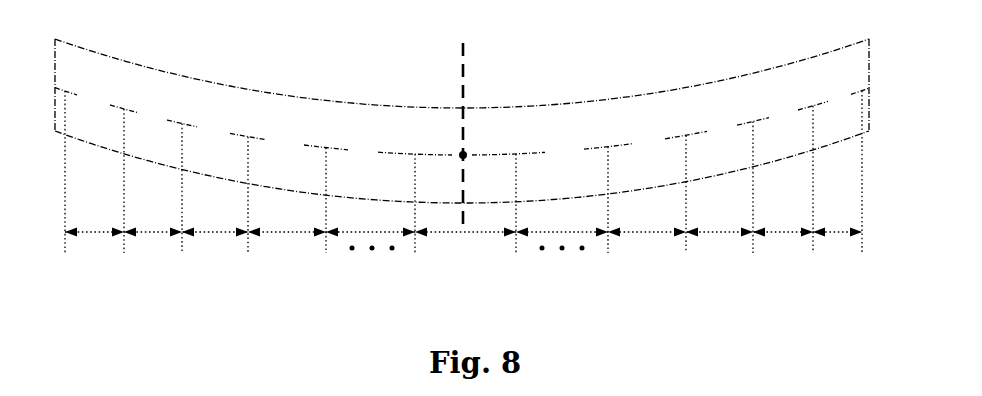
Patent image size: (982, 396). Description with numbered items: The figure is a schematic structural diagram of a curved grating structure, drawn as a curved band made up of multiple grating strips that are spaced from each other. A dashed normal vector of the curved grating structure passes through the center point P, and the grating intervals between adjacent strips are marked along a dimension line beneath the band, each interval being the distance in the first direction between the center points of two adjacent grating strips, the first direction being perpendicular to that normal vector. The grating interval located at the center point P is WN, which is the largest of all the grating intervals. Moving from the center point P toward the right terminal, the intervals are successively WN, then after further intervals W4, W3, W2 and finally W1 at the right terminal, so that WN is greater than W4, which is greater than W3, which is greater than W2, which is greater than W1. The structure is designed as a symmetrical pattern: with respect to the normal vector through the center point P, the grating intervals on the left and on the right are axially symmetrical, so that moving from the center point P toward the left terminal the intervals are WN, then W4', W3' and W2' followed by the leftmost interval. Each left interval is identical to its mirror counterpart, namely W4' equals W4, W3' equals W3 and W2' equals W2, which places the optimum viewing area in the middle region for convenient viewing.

The center point of the curved grating structure P is at (470, 136).
The grating interval at the right terminal W1 is at (469, 245).
The grating interval W2 is at (783, 245).
The grating interval W3 is at (723, 245).
The grating interval W4 is at (650, 245).
The grating interval at the center point WN is at (466, 245).
The grating interval on the left W2' is at (156, 245).
The grating interval on the left W3' is at (215, 245).
The grating interval on the left W4' is at (290, 245).